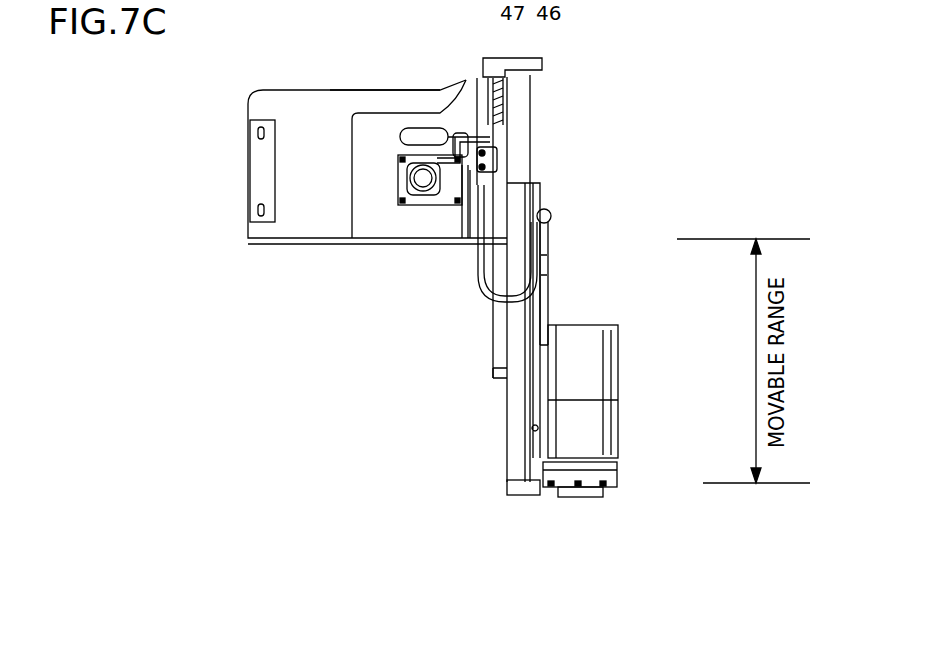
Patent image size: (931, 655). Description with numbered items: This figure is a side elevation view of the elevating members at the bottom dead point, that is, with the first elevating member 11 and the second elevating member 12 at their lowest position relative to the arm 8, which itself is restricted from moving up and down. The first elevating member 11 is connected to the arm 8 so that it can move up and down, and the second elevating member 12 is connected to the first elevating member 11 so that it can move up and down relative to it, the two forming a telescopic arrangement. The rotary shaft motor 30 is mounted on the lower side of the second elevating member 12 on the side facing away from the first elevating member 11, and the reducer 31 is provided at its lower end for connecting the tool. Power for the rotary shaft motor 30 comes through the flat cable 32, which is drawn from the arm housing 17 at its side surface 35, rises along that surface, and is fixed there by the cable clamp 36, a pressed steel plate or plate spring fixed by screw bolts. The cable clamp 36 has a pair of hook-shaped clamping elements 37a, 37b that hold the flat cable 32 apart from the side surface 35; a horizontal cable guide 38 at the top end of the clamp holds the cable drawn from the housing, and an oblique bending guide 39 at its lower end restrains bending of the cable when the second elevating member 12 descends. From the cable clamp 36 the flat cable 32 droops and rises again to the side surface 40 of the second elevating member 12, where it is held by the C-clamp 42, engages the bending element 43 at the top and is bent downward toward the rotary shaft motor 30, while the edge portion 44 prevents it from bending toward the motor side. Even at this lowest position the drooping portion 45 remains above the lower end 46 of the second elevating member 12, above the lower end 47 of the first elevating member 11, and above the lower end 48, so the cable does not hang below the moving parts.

The arm 8 is at (284, 102).
The arm housing 17 is at (331, 102).
The side surface 35 is at (386, 124).
The flat cable 32 is at (438, 128).
The cable guide 38 is at (445, 182).
The cable clamp 36 is at (470, 180).
The clamping element 37a is at (497, 150).
The clamping element 37b is at (497, 166).
The first elevating member 11 is at (530, 95).
The side surface 40 is at (512, 446).
The lower end 46 is at (522, 497).
The lower end 47 is at (494, 380).
The second elevating member 12 is at (520, 203).
The bending element 43 is at (549, 222).
The C-clamp 42 is at (548, 265).
The drooping portion 45 is at (513, 308).
The rotary shaft motor 30 is at (612, 345).
The edge portion 44 is at (530, 377).
The reducer 31 is at (610, 468).
The lower end 48 is at (468, 238).
The bending guide 39 is at (466, 215).